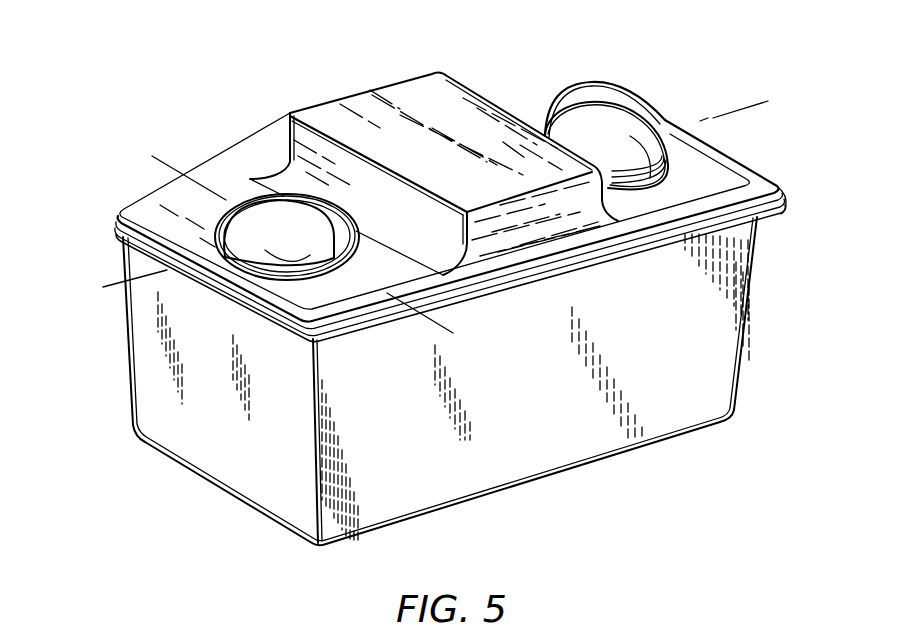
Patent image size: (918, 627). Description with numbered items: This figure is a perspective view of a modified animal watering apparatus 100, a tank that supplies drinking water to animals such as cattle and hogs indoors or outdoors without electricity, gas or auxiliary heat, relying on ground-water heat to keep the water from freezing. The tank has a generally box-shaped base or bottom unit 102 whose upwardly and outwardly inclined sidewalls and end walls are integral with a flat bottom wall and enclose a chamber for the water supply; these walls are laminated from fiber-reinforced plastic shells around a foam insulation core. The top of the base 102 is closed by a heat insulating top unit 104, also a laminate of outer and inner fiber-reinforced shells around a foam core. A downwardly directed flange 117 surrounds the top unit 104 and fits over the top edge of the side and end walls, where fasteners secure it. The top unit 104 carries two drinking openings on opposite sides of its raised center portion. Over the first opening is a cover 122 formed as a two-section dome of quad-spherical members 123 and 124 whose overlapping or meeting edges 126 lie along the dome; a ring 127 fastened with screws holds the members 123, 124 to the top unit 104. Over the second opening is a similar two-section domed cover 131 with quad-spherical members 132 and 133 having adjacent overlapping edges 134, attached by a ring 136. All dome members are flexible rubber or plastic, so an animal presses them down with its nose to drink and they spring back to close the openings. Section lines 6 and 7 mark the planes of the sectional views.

The animal watering apparatus 100 is at (714, 57).
The base or bottom unit 102 is at (148, 370).
The top unit 104 is at (136, 212).
The downwardly directed flange 117 is at (522, 281).
The cover 122 is at (355, 214).
The quad-spherical member 123 is at (290, 250).
The quad-spherical member 124 is at (314, 210).
The overlapping or meeting edges 126 is at (257, 207).
The ring 127 is at (226, 240).
The two section domed cover 131 is at (656, 121).
The quad-spherical member 132 is at (670, 124).
The quad-spherical member 133 is at (573, 128).
The adjacent overlapping edges 134 is at (675, 149).
The ring 136 is at (677, 170).
The section line 6- 6 is at (146, 281).
The section line 7- 7 is at (160, 172).